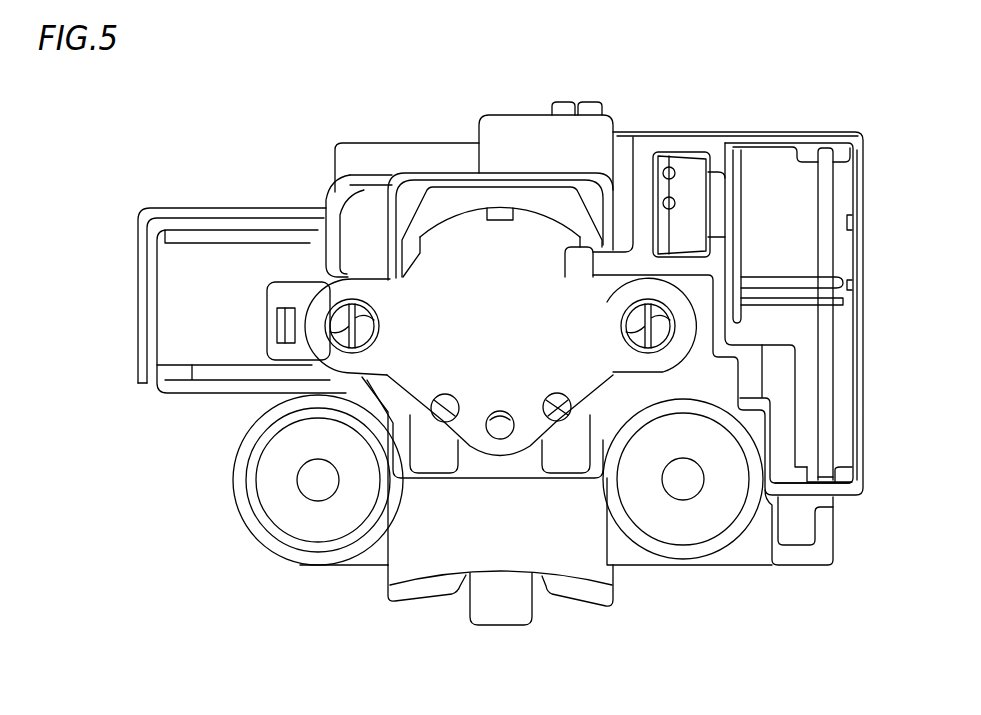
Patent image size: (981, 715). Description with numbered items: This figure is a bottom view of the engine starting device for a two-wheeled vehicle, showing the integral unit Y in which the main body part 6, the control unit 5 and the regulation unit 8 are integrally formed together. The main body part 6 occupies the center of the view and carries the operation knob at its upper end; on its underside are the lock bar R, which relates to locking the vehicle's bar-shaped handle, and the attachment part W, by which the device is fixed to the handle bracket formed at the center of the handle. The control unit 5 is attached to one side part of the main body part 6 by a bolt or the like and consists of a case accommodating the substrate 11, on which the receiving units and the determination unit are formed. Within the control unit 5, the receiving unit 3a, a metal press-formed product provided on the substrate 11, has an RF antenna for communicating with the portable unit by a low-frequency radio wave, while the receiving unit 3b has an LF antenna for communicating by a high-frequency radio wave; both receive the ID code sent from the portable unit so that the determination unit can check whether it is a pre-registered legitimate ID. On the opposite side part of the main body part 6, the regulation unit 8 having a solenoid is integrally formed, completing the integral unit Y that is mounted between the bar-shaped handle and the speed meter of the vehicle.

The integral unit Y is at (267, 130).
The regulation unit 8 is at (210, 214).
The main body part 6 is at (645, 127).
The control unit 5 is at (785, 140).
The receiving unit 3b is at (690, 165).
The receiving unit 3a is at (810, 287).
The substrate 11 is at (830, 190).
The attachment part W is at (357, 560).
The lock bar R is at (488, 614).